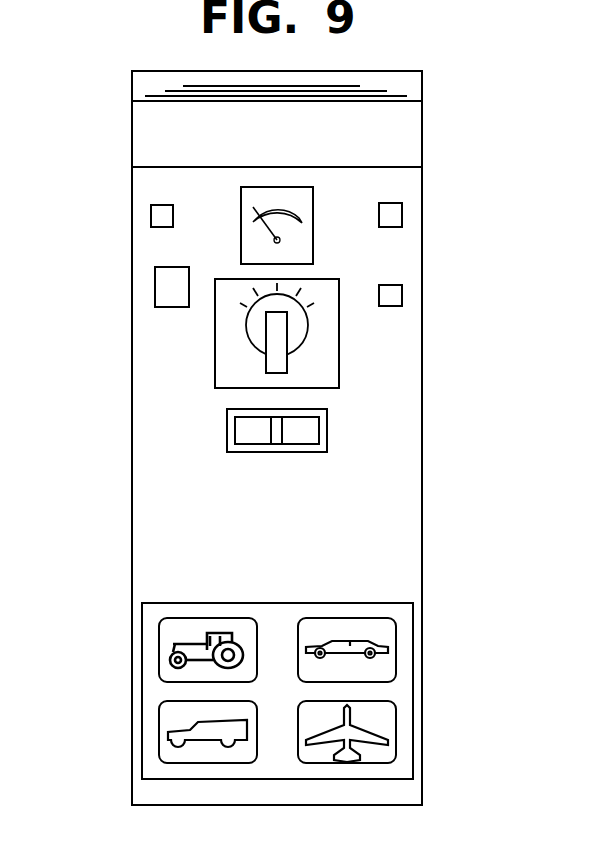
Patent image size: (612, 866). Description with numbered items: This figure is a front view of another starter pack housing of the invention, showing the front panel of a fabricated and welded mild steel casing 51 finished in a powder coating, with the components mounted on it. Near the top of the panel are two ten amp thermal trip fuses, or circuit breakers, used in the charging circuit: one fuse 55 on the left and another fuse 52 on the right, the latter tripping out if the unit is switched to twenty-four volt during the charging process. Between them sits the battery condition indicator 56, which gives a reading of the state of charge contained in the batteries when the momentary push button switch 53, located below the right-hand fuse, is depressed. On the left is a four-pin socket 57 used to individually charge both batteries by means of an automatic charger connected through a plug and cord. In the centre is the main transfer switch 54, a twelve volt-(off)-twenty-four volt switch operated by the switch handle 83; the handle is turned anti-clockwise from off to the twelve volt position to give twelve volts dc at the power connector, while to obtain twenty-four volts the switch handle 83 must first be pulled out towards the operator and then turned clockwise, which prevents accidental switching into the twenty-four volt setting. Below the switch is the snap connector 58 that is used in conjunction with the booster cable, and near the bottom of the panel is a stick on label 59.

The mild steel casing 51 is at (422, 101).
The 10 amp thermal trip fuse 52 is at (392, 213).
The momentary push button switch 53 is at (402, 293).
The main transfer switch 54 is at (339, 355).
The 10 amp thermal trip fuse 55 is at (151, 213).
The battery condition indicator 56 is at (241, 248).
The 4-pin socket 57 is at (155, 288).
The snap connector 58 is at (327, 428).
The stick on label 59 is at (400, 617).
The switch handle 83 is at (266, 367).